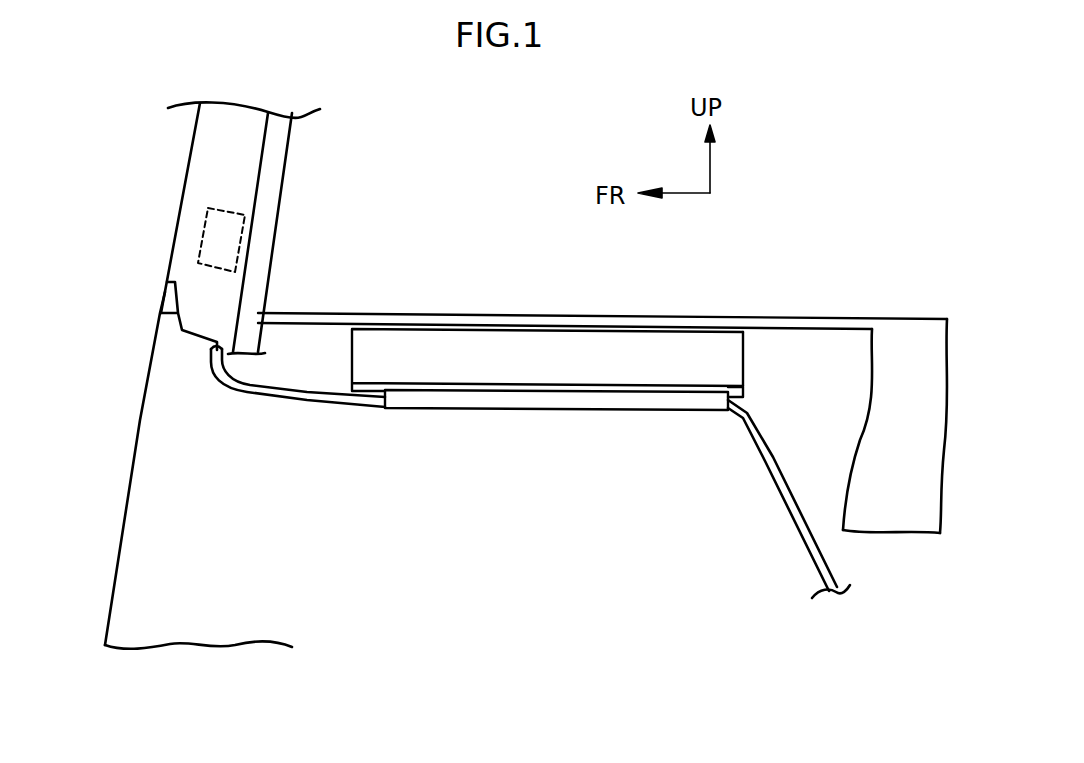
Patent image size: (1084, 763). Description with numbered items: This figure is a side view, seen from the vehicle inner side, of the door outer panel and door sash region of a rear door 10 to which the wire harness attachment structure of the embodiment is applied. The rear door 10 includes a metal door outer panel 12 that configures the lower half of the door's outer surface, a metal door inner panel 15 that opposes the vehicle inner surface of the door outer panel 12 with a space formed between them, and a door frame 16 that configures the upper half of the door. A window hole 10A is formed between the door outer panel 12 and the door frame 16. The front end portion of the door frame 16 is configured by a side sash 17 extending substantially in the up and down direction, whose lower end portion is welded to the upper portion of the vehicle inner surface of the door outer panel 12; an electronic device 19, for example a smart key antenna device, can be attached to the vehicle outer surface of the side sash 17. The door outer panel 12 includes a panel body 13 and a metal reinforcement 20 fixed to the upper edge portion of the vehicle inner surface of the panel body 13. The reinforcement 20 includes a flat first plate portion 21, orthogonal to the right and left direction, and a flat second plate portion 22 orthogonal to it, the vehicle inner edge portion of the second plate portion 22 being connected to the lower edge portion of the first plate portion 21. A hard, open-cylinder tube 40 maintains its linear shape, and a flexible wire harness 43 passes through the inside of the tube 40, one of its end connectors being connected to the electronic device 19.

The rear door 10 is at (126, 170).
The window hole 10A is at (283, 180).
The door outer panel 12 is at (850, 340).
The panel body 13 is at (808, 340).
The door inner panel 15 is at (927, 497).
The door frame 16 is at (192, 140).
The side sash 17 is at (197, 202).
The electronic device 19 is at (197, 247).
The reinforcement 20 is at (612, 340).
The first plate portion 21 is at (730, 357).
The second plate portion 22 is at (745, 390).
The tube 40 is at (620, 400).
The wire harness 43 is at (795, 518).